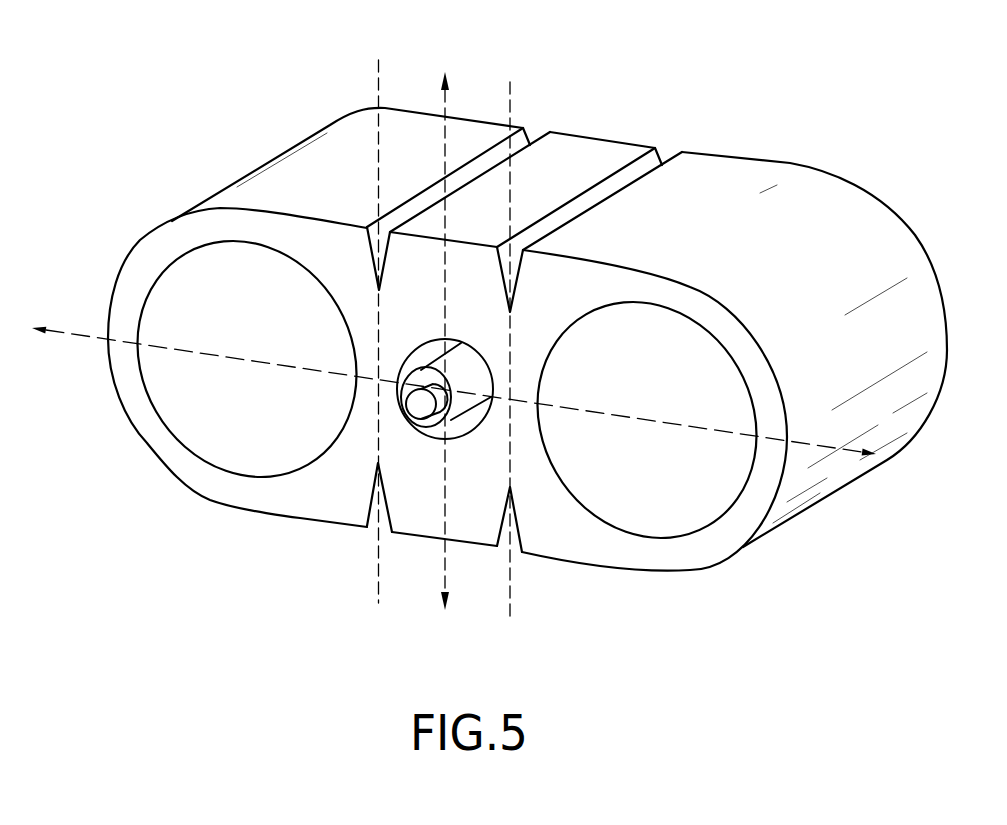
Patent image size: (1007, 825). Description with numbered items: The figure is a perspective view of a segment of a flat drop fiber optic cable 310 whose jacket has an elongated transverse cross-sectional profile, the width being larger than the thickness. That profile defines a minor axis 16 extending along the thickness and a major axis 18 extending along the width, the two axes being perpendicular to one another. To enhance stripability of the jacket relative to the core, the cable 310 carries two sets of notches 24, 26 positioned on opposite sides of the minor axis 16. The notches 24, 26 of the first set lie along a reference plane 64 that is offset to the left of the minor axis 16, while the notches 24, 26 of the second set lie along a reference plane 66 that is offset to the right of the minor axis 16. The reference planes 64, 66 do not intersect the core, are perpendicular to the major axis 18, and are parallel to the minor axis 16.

The fiber optic cable 310 is at (866, 172).
The first notch 24 is at (416, 198).
The second notch 26 is at (366, 538).
The reference plane 64 is at (378, 84).
The reference plane 66 is at (511, 105).
The minor axis 16 is at (452, 98).
The major axis 18 is at (76, 334).